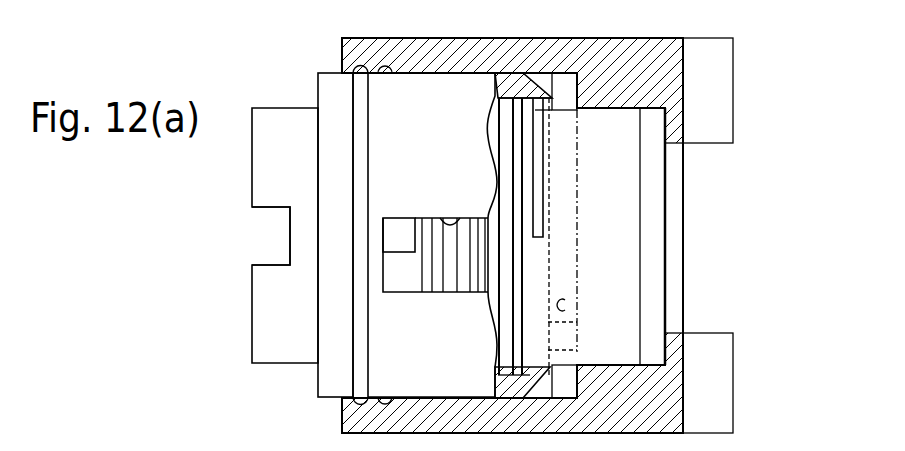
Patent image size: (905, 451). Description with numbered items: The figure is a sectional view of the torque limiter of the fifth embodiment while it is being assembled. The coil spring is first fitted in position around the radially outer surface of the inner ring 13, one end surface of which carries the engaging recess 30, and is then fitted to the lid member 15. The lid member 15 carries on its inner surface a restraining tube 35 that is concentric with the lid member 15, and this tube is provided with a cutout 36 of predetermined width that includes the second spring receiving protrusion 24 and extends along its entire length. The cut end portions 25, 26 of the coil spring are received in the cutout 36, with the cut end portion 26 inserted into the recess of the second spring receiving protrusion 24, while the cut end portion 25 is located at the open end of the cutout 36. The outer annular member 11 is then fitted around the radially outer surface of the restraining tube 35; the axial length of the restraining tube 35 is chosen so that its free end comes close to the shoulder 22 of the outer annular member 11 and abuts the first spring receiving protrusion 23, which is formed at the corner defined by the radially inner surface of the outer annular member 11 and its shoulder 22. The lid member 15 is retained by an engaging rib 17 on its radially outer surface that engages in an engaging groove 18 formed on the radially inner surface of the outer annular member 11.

The outer annular member 11 is at (415, 52).
The inner ring 13 is at (292, 128).
The lid member 15 is at (333, 100).
The engaging rib 17 is at (358, 297).
The engaging groove 18 is at (383, 396).
The shoulder 22 is at (568, 90).
The first spring receiving protrusion 23 is at (568, 335).
The second spring receiving protrusion 24 is at (405, 293).
The cut end portion 25 is at (540, 197).
The cut end portion 26 is at (405, 250).
The engaging recess 30 is at (270, 262).
The restraining tube 35 is at (517, 88).
The cutout 36 is at (455, 222).